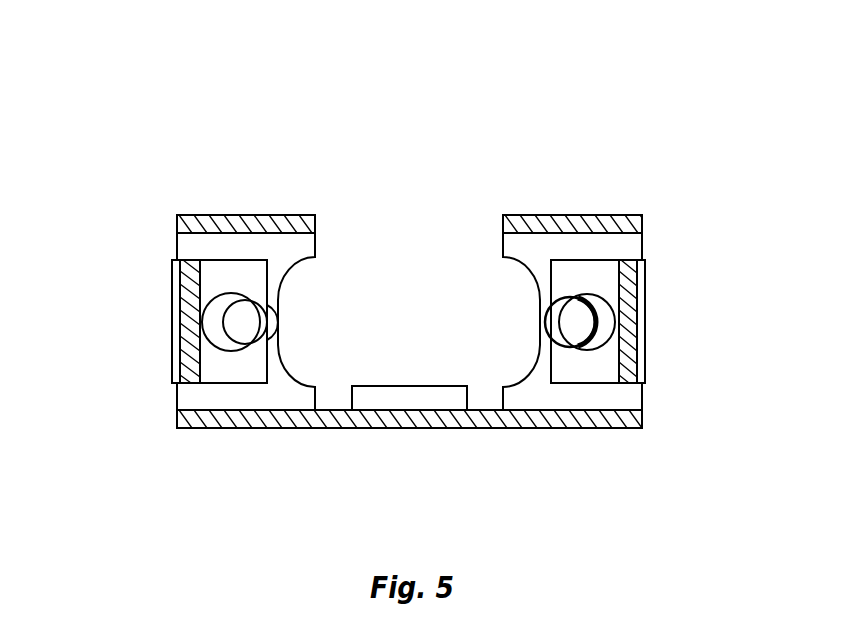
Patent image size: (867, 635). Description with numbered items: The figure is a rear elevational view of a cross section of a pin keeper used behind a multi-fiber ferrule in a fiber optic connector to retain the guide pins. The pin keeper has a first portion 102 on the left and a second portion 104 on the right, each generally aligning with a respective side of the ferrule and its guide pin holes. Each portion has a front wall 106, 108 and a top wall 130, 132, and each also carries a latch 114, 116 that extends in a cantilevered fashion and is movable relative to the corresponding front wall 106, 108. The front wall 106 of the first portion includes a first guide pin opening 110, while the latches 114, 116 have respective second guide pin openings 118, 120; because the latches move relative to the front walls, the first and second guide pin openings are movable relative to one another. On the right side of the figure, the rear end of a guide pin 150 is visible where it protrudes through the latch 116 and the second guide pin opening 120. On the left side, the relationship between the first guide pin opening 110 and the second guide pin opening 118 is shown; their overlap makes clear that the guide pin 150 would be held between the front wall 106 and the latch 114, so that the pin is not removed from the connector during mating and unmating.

The first portion 102 is at (158, 238).
The second portion 104 is at (680, 228).
The front wall 106 is at (185, 400).
The front wall 108 is at (632, 398).
The first guide pin opening 110 is at (270, 322).
The latch 114 is at (215, 282).
The latch 116 is at (607, 275).
The second guide pin opening 118 is at (242, 310).
The second guide pin opening 120 is at (603, 312).
The top wall 130 is at (282, 213).
The top wall 132 is at (615, 215).
The guide pin 150 is at (557, 323).